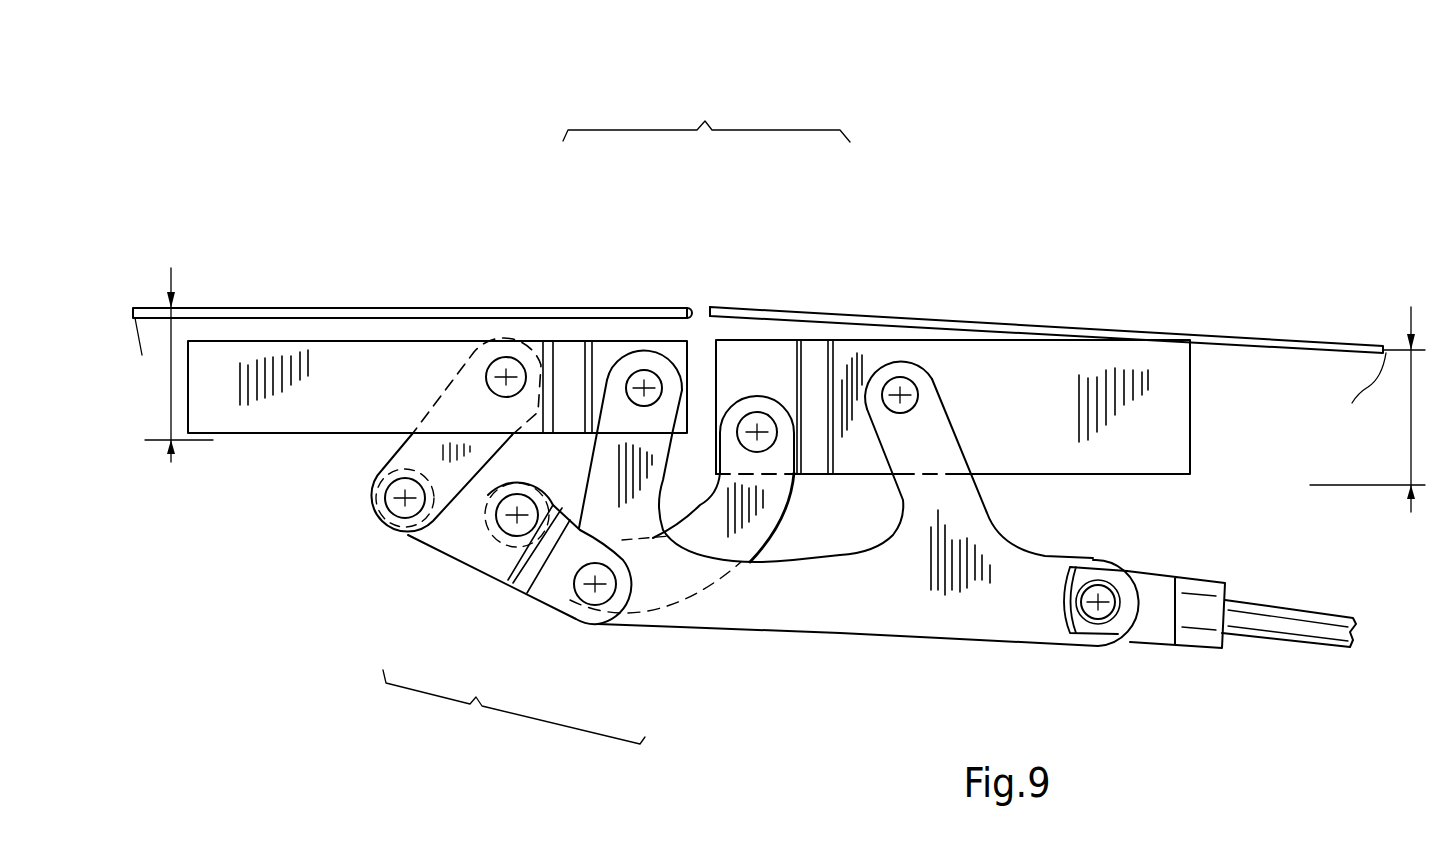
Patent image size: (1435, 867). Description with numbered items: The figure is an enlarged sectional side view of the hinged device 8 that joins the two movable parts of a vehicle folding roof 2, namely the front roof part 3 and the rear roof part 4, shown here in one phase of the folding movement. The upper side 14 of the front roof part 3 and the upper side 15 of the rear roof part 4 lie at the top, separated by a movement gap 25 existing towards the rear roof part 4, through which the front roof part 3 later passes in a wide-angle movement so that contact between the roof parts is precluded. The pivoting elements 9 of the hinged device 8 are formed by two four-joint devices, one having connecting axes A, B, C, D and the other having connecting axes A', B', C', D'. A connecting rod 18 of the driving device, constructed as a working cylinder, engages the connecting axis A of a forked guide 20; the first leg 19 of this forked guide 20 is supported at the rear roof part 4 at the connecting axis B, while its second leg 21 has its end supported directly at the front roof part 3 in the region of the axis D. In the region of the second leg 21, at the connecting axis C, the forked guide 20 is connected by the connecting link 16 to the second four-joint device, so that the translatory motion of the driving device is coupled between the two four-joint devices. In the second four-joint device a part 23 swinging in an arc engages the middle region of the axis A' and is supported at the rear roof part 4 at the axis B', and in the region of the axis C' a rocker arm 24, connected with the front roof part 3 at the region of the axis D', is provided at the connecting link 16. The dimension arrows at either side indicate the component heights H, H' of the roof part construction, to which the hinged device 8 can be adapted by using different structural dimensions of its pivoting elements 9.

The roof 2 is at (708, 121).
The front roof part 3 is at (294, 300).
The rear roof part 4 is at (1222, 323).
The hinged device 8 is at (470, 705).
The pivoting elements 9 is at (345, 655).
The upper side of the front roof part 14 is at (407, 308).
The upper side of the rear roof part 15 is at (996, 325).
The connecting link 16 is at (447, 527).
The connecting rod 18 is at (1248, 620).
The first leg 19 is at (958, 513).
The forked guide 20 is at (849, 595).
The second leg 21 is at (608, 481).
The part swinging in an arc 23 is at (741, 535).
The rocker arm 24 is at (390, 462).
The movement gap 25 is at (698, 308).
The connecting axis A is at (1116, 556).
The connecting axis A' is at (485, 573).
The connecting axis B is at (960, 392).
The connecting axis B' is at (781, 331).
The connecting axis C is at (588, 627).
The connecting axis C' is at (351, 517).
The connecting axis D is at (644, 309).
The connecting axis D' is at (492, 299).
The component height H is at (1367, 409).
The component height H' is at (163, 365).